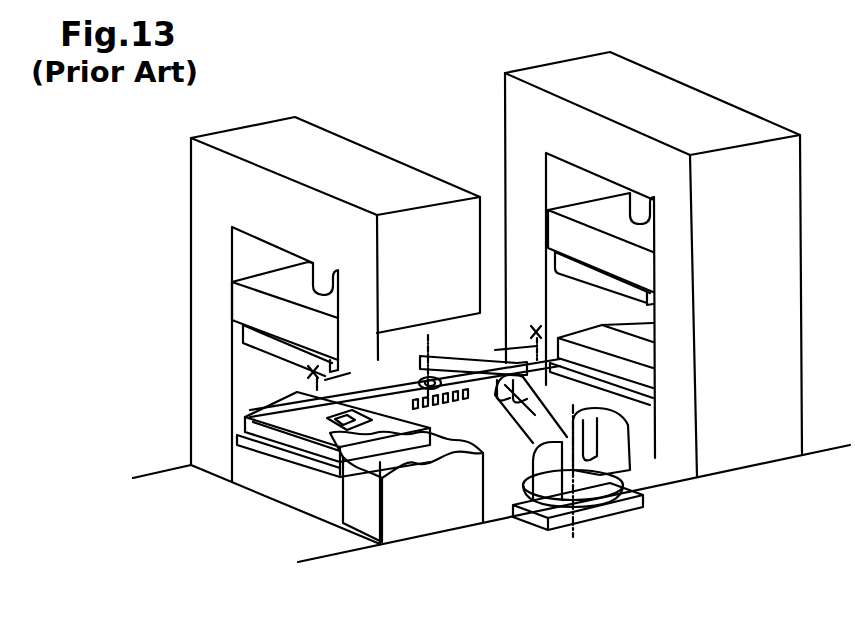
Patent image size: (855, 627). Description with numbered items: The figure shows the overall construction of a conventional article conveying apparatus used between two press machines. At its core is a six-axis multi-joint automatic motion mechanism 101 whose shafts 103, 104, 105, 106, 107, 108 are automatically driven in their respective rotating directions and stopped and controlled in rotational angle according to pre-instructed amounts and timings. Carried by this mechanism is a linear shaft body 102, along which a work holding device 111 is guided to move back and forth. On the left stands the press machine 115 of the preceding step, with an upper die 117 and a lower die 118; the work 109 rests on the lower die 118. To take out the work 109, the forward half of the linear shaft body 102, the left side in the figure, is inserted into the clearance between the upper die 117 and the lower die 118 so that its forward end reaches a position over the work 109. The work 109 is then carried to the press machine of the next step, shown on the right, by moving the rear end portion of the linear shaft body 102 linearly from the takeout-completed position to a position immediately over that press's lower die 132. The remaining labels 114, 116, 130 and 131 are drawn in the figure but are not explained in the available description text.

The six-axis multi-joint automatic motion mechanism 101 is at (548, 482).
The linear shaft body 102 is at (308, 262).
The shaft 103 is at (430, 343).
The shaft 104 is at (458, 341).
The shaft 105 is at (393, 347).
The shaft 106 is at (500, 387).
The shaft 107 is at (510, 437).
The shaft 108 is at (628, 430).
The work 109 is at (283, 397).
The work holding device 111 is at (305, 445).
The die set 114 is at (320, 417).
The press machine 115 is at (316, 122).
The second press 116 is at (636, 58).
The upper die 117 is at (262, 348).
The lower die 118 is at (257, 411).
The upper die 130 is at (243, 303).
The stopper 131 is at (508, 363).
The lower die 132 is at (573, 335).